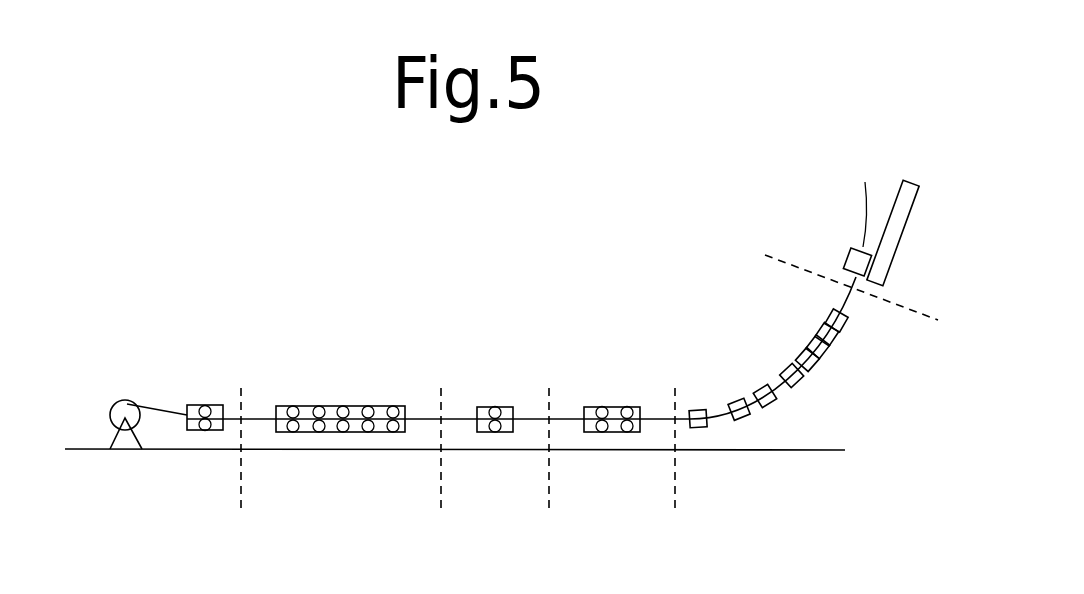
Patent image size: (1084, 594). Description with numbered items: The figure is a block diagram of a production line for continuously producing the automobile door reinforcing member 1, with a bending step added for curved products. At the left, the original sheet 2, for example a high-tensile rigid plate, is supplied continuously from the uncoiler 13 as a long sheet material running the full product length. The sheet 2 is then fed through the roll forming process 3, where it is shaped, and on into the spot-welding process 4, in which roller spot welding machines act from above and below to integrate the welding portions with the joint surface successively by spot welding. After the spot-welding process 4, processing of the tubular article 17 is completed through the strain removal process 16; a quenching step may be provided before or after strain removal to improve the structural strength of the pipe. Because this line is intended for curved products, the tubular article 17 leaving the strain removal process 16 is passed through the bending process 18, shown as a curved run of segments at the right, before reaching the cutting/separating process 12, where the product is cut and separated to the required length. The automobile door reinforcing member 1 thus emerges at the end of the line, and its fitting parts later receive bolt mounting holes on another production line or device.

The automobile door reinforcing member 1 is at (867, 217).
The cutting/separating process 12 is at (848, 253).
The uncoiler 13 is at (128, 400).
The original sheet 2 is at (160, 408).
The roll forming process 3 is at (337, 407).
The spot-welding process 4 is at (487, 407).
The strain removal process 16 is at (610, 407).
The tubular article 17 is at (425, 420).
The bending process 18 is at (780, 362).